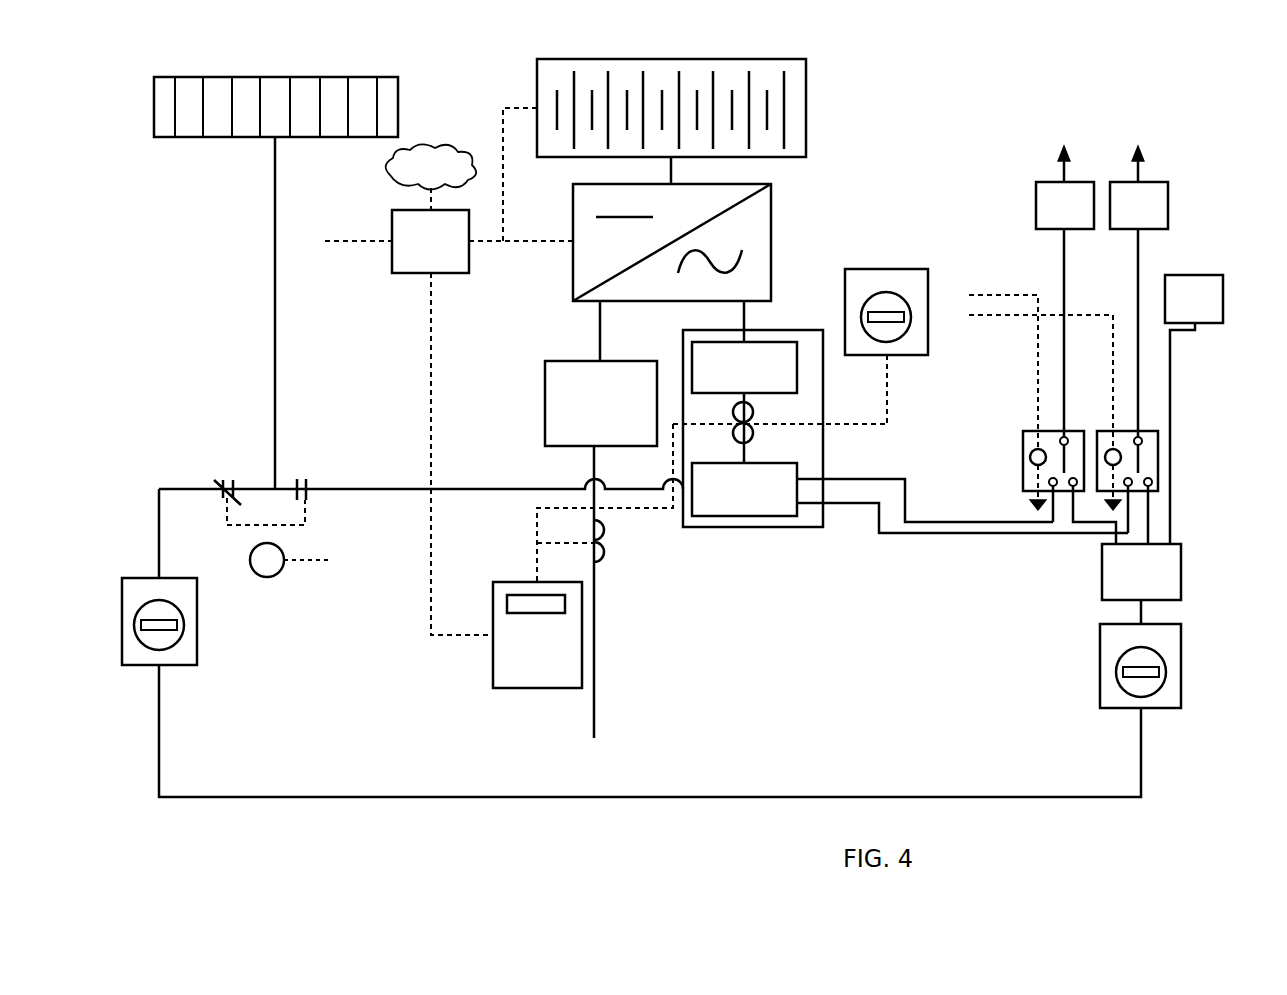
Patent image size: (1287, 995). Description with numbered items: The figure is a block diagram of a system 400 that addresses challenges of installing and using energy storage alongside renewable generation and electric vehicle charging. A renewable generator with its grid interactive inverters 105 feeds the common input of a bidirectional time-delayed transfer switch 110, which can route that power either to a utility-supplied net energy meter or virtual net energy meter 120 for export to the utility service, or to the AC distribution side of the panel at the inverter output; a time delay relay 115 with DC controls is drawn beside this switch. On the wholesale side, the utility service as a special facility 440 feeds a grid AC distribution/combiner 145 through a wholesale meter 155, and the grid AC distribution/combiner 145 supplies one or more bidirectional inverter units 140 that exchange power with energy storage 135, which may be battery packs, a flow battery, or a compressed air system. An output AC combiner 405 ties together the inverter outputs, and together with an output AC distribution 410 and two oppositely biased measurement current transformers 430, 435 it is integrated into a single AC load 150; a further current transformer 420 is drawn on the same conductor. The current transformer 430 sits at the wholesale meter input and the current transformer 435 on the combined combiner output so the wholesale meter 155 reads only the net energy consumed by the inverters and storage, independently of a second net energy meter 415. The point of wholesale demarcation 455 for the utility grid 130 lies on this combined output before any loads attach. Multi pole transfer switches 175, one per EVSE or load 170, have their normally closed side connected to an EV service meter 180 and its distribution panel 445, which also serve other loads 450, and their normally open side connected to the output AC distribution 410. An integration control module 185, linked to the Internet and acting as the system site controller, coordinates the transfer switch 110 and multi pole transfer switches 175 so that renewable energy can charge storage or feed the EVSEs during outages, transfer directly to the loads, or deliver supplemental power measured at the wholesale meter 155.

The renewable generator system with grid interactive inverters 105 is at (222, 138).
The bidirectional time-delayed transfer switch 110 is at (252, 528).
The time delay relay (TD) with DC controls 115 is at (367, 548).
The net energy meter (NEM) or virtual net energy meter (VNEM) 120 is at (185, 666).
The utility grid 130 is at (1141, 752).
The energy storage 135 is at (537, 92).
The bidirectional inverter units 140 is at (573, 299).
The grid AC distribution/combiner 145 is at (545, 372).
The AC load 150 is at (772, 330).
The wholesale meter 155 is at (582, 663).
The EVSE or load 170 is at (1118, 182).
The multi pole transfer switches 175 is at (1105, 431).
The EV service meter 180 is at (1181, 640).
The integration control module 185 is at (440, 273).
The system 400 is at (1224, 110).
The output AC combiner 405 is at (797, 368).
The output AC distribution 410 is at (745, 516).
The second net energy meter 415 is at (912, 269).
The current transformer 420 is at (733, 424).
The current transformer 430 is at (604, 552).
The current transformer 435 is at (752, 435).
The utility service as a special facility 440 is at (594, 705).
The distribution panel 445 is at (1181, 582).
The other loads 450 is at (1223, 308).
The point of wholesale demarcation 455 is at (750, 399).